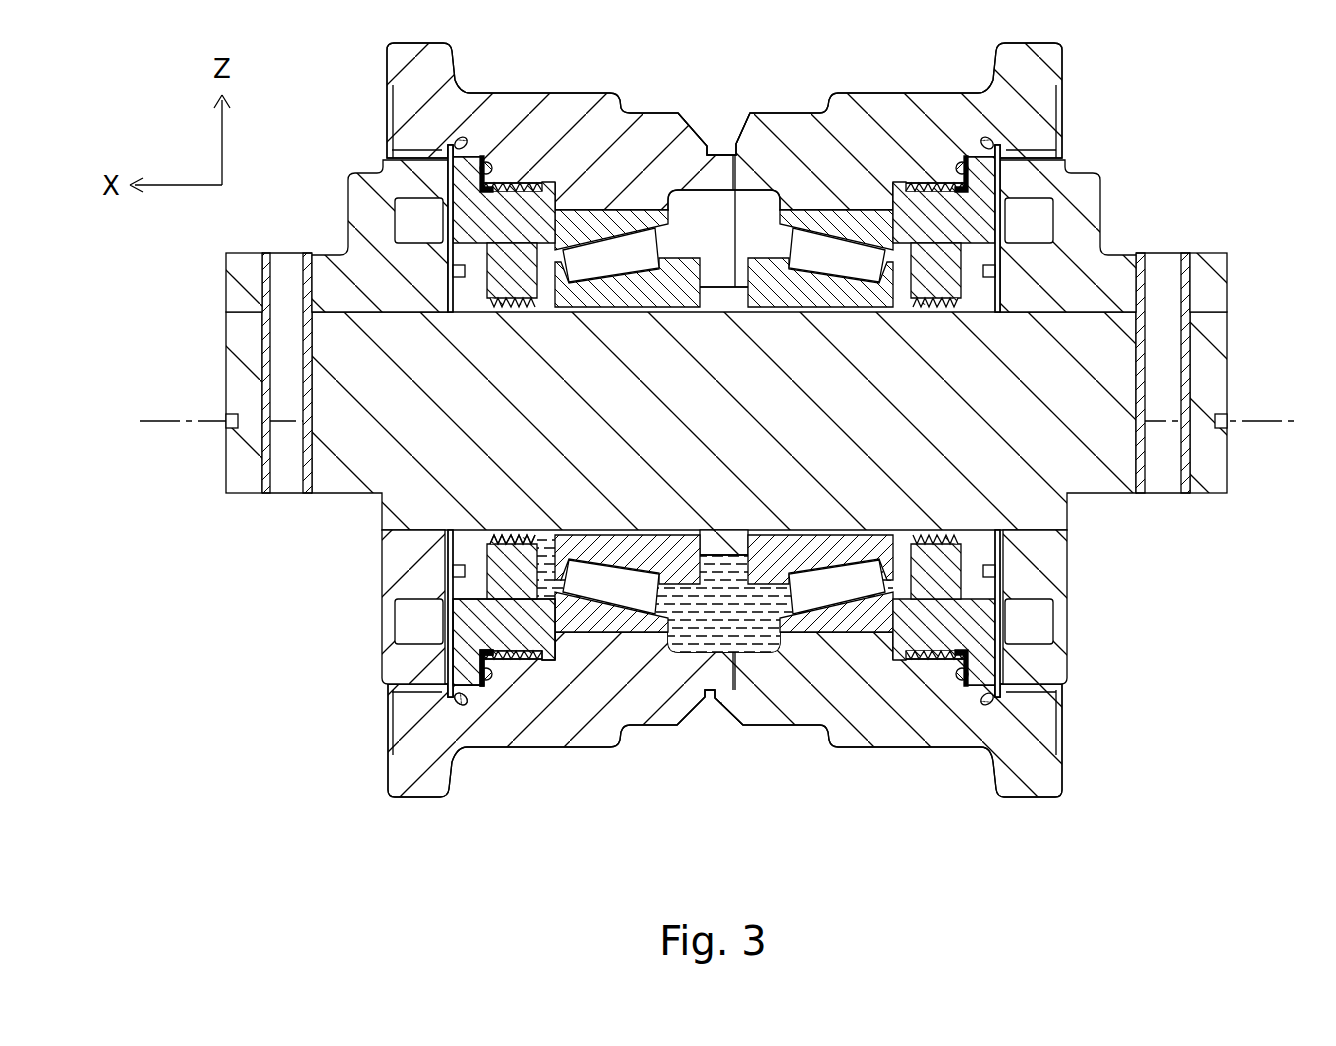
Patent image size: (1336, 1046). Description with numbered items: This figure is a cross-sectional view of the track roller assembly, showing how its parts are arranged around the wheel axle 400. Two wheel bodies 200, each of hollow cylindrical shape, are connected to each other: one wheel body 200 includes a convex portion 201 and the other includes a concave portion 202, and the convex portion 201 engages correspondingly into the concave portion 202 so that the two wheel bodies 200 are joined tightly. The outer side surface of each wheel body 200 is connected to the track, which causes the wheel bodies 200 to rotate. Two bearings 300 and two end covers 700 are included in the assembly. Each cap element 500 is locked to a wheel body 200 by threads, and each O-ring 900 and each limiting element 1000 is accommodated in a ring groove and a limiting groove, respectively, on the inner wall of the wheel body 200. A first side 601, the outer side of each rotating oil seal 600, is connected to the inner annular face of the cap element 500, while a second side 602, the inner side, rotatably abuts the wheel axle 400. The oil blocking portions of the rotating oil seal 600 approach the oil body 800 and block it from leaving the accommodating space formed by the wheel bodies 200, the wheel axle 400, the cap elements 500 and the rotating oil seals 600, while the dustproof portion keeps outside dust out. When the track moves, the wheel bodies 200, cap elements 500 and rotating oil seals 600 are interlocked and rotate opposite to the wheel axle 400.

The wheel body 200 is at (578, 713).
The convex portion 201 is at (725, 668).
The concave portion 202 is at (722, 147).
The bearing 300 is at (612, 622).
The wheel axle 400 is at (237, 366).
The cap element 500 is at (465, 628).
The rotating oil seal 600 is at (507, 568).
The first side 601 is at (548, 604).
The second side 602 is at (502, 535).
The end cover 700 is at (247, 289).
The oil body 800 is at (541, 546).
The O-ring 900 is at (485, 680).
The limiting element 1000 is at (458, 705).